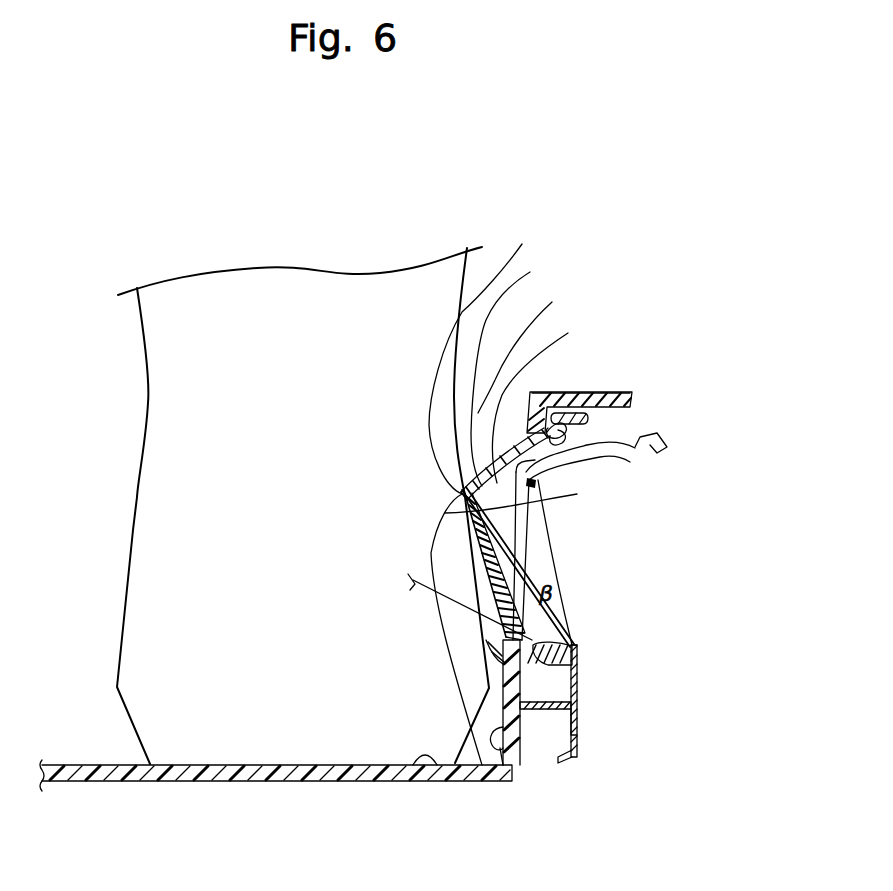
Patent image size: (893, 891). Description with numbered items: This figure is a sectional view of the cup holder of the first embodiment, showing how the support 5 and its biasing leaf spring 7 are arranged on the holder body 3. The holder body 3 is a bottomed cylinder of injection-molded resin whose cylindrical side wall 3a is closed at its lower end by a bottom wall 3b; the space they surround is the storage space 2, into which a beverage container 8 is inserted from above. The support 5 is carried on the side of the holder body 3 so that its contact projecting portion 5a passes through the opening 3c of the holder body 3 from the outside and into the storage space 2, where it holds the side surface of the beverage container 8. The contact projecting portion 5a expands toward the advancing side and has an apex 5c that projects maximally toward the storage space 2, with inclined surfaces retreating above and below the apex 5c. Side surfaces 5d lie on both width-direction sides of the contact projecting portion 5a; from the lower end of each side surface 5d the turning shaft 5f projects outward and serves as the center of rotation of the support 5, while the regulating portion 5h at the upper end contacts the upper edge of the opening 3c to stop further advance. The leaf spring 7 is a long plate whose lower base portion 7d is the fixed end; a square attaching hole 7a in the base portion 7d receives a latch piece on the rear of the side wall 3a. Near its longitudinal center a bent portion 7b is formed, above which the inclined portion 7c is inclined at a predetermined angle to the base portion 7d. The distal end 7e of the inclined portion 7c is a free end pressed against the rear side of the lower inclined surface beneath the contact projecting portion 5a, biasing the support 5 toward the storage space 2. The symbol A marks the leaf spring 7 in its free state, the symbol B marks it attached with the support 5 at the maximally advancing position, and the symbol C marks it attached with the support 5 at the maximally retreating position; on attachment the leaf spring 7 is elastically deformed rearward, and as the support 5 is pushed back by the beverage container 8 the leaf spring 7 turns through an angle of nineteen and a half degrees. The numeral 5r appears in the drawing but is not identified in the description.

The storage space 2 is at (524, 349).
The holder body 3 is at (598, 392).
The side wall 3a is at (514, 758).
The bottom wall 3b is at (432, 783).
The opening 3c is at (527, 432).
The support 5 is at (689, 405).
The contact projecting portion 5a is at (485, 492).
The apex 5c is at (490, 766).
The side surface 5d is at (519, 370).
The turning shaft 5f is at (573, 627).
The regulating portion 5h is at (575, 392).
The root portion 5r is at (584, 725).
The leaf spring 7 is at (577, 684).
The attaching hole 7a is at (580, 726).
The bent portion 7b is at (578, 650).
The inclined portion 7c is at (525, 560).
The base portion 7d is at (577, 700).
The distal end 7e is at (560, 497).
The beverage container 8 is at (178, 511).
The free state of the leaf spring A is at (470, 608).
The maximally advancing state of the leaf spring B is at (503, 533).
The maximally retreating state of the leaf spring C is at (548, 528).